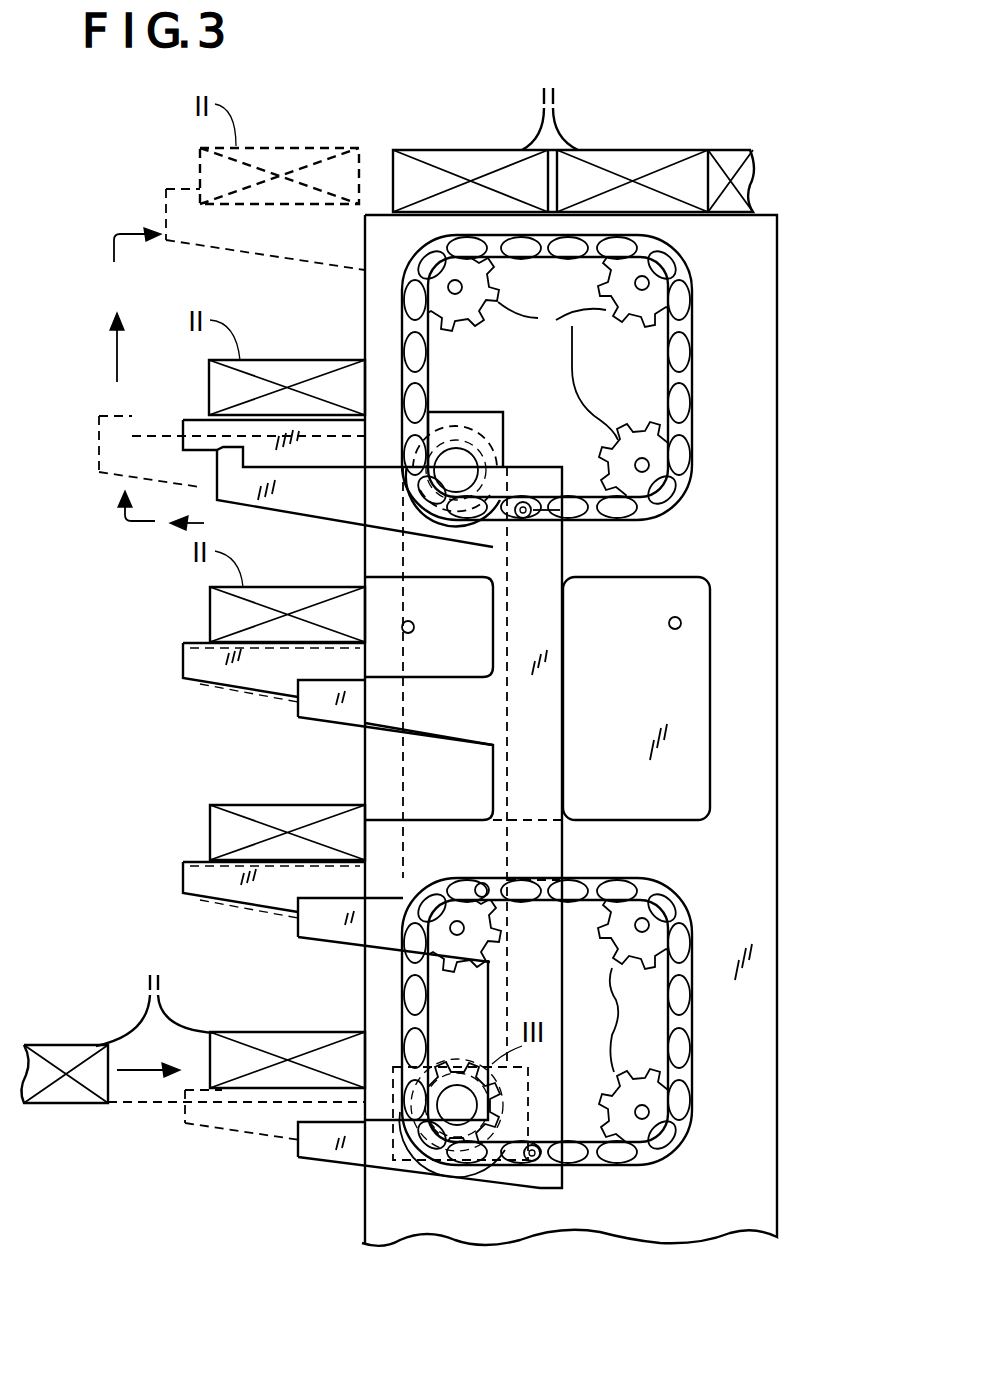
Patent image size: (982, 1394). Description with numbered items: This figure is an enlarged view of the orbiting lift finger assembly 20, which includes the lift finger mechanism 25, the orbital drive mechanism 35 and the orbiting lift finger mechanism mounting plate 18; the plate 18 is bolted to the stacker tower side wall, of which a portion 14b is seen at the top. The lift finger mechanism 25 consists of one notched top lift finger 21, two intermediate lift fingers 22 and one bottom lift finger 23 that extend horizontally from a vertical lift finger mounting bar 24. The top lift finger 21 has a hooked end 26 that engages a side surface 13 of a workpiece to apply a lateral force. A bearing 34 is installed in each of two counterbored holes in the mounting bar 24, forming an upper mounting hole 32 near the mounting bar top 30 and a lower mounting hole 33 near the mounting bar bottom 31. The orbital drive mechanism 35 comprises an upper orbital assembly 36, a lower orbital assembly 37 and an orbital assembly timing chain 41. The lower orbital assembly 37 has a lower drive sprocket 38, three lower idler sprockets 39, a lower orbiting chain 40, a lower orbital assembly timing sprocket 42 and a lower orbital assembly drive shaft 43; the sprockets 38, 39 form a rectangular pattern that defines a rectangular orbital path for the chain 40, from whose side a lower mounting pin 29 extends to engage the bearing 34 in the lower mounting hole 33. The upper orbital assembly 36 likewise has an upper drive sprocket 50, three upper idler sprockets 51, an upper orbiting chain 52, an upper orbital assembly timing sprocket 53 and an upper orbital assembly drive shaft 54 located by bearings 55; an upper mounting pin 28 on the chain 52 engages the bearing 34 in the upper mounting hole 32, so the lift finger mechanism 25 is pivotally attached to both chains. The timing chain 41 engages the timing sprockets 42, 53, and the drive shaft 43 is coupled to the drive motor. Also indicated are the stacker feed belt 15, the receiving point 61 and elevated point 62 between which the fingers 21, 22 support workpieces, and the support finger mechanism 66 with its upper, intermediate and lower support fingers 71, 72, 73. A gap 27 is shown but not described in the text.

The side surface 13 is at (200, 172).
The stator bar 14b is at (700, 213).
The stacker feed belt 15 is at (115, 1104).
The orbiting lift finger mechanism mounting plate 18 is at (777, 702).
The orbiting lift finger assembly 20 is at (108, 615).
The notched top lift finger 21 is at (265, 266).
The intermediate lift fingers 22 is at (200, 684).
The bottom lift finger 23 is at (206, 1126).
The lift finger mounting bar 24 is at (564, 853).
The lift finger mechanism 25 is at (564, 560).
The hooked end 26 is at (217, 451).
The slot 27 is at (515, 806).
The lift finger assembly upper mounting pin 28 is at (508, 258).
The lift finger assembly lower mounting pin 29 is at (483, 882).
The mounting bar top 30 is at (530, 462).
The mounting bar bottom 31 is at (543, 1190).
The upper mounting hole 32 is at (505, 522).
The lower mounting hole 33 is at (536, 1145).
The bearing 34 is at (528, 520).
The orbital drive mechanism 35 is at (655, 565).
The upper orbital assembly 36 is at (705, 371).
The lower orbital assembly 37 is at (705, 1078).
The lower drive sprocket 38 is at (457, 1084).
The lower idler sprockets 39 is at (504, 950).
The lower orbiting chain 40 is at (672, 1016).
The orbital assembly timing chain 41 is at (510, 730).
The lower orbital assembly timing sprocket 42 is at (430, 1062).
The lower orbital assembly drive shaft 43 is at (452, 1148).
The upper drive sprocket 50 is at (483, 436).
The upper idler sprockets 51 is at (540, 322).
The upper orbiting chain 52 is at (672, 364).
The upper orbital assembly timing sprocket 53 is at (478, 412).
The upper orbital assembly drive shaft 54 is at (457, 458).
The upper orbital assembly drive shaft bearings 55 is at (426, 446).
The receiving point 61 is at (290, 1093).
The elevated point 62 is at (383, 206).
The support finger mechanism 66 is at (248, 681).
The upper support finger 71 is at (183, 424).
The intermediate support finger 72 is at (183, 661).
The lower support finger 73 is at (183, 881).